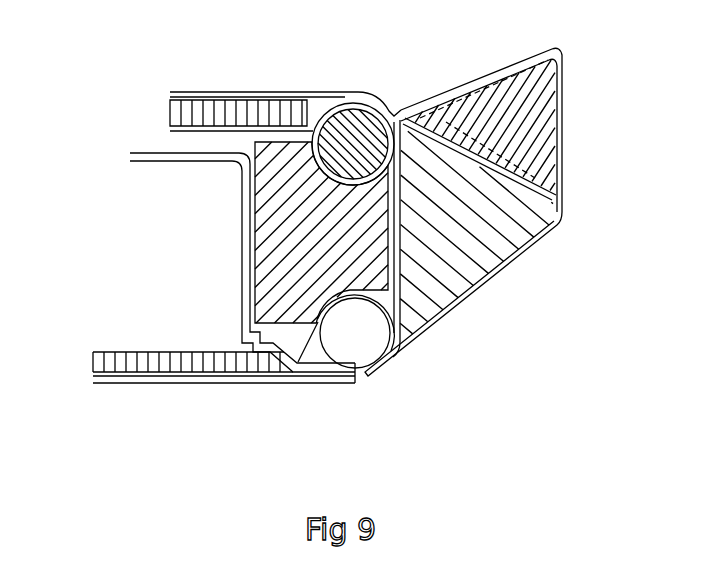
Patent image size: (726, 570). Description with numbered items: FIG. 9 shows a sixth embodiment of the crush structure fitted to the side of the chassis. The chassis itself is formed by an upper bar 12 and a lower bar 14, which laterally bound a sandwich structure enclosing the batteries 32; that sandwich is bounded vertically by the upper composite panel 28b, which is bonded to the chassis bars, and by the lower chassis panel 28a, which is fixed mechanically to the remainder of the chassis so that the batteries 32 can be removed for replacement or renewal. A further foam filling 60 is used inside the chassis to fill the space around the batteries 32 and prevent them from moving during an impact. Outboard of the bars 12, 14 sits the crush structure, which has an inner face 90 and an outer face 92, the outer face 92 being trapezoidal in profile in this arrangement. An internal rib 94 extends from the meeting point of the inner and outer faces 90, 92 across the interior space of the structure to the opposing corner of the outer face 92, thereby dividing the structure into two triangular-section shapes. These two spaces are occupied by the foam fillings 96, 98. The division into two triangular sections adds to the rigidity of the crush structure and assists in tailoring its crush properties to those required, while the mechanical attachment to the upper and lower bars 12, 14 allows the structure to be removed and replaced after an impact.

The upper bar 12 is at (362, 128).
The lower bar 14 is at (355, 333).
The lower chassis panel 28a is at (190, 363).
The upper composite panel 28b is at (211, 110).
The batteries 32 is at (165, 262).
The foam filling 60 is at (287, 187).
The inner face 90 is at (397, 253).
The outer face 92 is at (516, 262).
The internal rib 94 is at (507, 152).
The foam filling 96 is at (522, 93).
The foam filling 98 is at (470, 257).